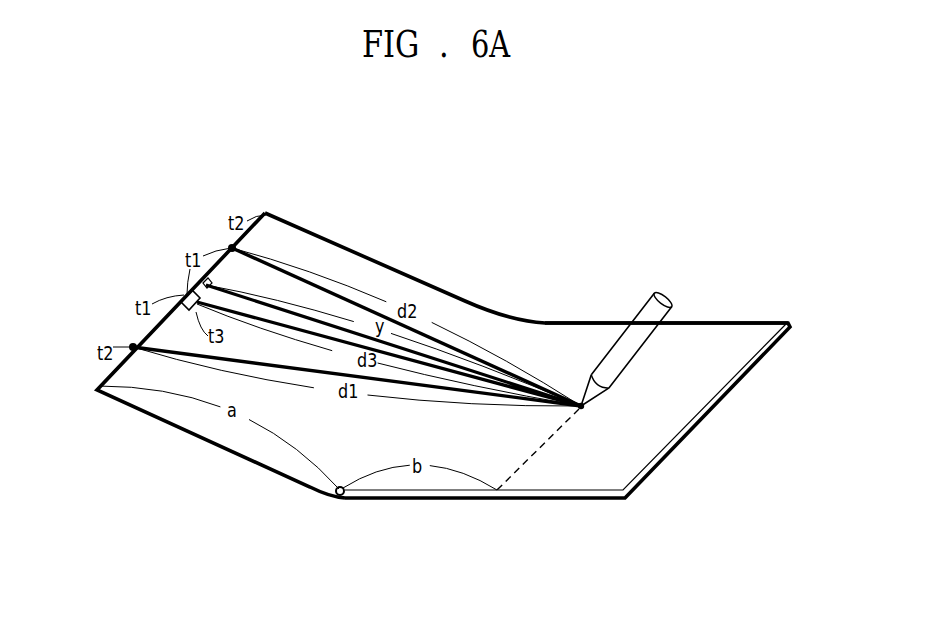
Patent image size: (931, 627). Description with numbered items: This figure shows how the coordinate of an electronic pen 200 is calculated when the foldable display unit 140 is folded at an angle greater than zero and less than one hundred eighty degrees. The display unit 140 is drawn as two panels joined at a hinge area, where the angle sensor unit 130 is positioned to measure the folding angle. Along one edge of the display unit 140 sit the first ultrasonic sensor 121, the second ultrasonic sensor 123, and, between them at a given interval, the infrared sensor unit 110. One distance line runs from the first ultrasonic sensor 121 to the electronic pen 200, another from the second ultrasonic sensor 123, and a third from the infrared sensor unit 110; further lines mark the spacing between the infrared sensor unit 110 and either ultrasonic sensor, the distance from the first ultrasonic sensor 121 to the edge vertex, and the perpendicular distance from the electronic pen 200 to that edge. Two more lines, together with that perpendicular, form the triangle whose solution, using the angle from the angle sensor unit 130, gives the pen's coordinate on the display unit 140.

The infrared sensor unit 110 is at (184, 293).
The first ultrasonic sensor 121 is at (132, 345).
The second ultrasonic sensor 123 is at (231, 247).
The angle sensor unit 130 is at (338, 496).
The display unit 140 is at (736, 328).
The electronic pen 200 is at (662, 290).